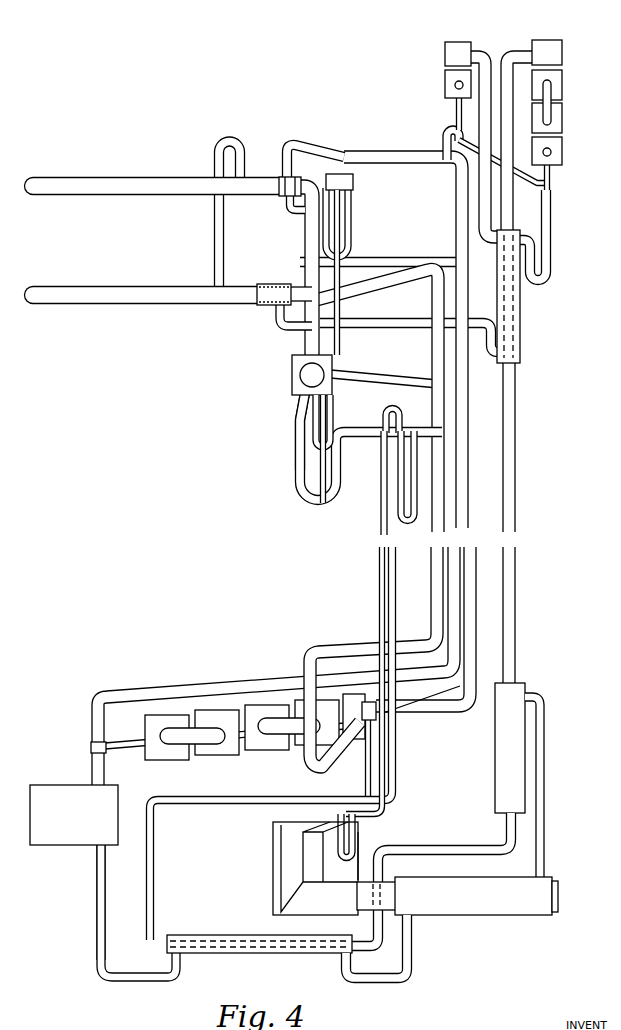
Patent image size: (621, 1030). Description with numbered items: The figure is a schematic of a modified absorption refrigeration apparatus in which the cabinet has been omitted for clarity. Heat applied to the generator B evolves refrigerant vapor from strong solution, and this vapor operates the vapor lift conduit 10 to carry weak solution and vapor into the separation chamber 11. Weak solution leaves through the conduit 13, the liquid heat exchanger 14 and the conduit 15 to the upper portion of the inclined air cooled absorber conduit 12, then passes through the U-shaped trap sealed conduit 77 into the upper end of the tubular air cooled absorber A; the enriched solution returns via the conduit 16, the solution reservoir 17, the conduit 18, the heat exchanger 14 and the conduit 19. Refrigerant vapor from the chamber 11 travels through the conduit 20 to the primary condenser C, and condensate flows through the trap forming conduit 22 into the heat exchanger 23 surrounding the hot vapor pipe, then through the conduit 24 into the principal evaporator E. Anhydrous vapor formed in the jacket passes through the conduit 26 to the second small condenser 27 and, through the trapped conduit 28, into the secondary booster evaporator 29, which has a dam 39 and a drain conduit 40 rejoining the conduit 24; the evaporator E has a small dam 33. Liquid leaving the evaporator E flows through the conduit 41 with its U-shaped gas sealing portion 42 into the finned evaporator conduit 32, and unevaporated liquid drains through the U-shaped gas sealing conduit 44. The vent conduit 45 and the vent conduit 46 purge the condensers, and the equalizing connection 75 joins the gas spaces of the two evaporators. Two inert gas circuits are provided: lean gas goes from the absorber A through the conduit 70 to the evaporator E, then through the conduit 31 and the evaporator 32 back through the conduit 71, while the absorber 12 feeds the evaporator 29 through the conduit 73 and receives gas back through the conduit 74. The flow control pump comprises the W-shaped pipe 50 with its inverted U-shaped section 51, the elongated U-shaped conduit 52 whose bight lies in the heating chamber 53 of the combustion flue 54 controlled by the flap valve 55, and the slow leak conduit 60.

The vapor lift conduit 10 is at (546, 826).
The separation chamber 11 is at (494, 749).
The air cooled absorber conduit 12 is at (378, 716).
The conduit 13 is at (430, 849).
The liquid heat exchanger 14 is at (268, 952).
The conduit 15 is at (151, 887).
The conduit 16 is at (92, 761).
The solution reservoir 17 is at (92, 808).
The conduit 18 is at (101, 916).
The conduit 19 is at (367, 978).
The conduit 20 is at (518, 509).
The conduit 22 is at (548, 243).
The heat exchanger 23 is at (520, 330).
The conduit 24 is at (378, 325).
The conduit 26 is at (476, 52).
The second small condenser 27 is at (452, 40).
The conduit 28 is at (380, 153).
The secondary booster evaporator 29 is at (107, 183).
The conduit 31 is at (306, 337).
The finned air cooling evaporator conduit 32 is at (303, 369).
The small dam 33 is at (275, 286).
The dam 39 is at (297, 183).
The drain conduit 40 is at (337, 218).
The conduit 41 is at (332, 349).
The U-shaped gas sealing portion 42 is at (327, 411).
The U-shaped gas sealing conduit 44 is at (298, 430).
The vent conduit 45 is at (540, 183).
The vent conduit 46 is at (293, 146).
The W-shaped pipe 50 is at (318, 477).
The inverted U-shaped section 51 is at (386, 450).
The elongated U-shaped conduit 52 is at (393, 810).
The heating chamber 53 is at (360, 846).
The products of combustion discharge flue 54 is at (286, 857).
The flap valve 55 is at (330, 878).
The slow leak conduit 60 is at (390, 418).
The conduit 70 is at (324, 653).
The conduit 71 is at (385, 379).
The conduit 73 is at (456, 705).
The conduit 74 is at (387, 263).
The equalizing connection 75 is at (221, 244).
The U-shaped trap sealed conduit 77 is at (337, 772).
The tubular air cooled absorber A is at (217, 757).
The generator B is at (455, 892).
The primary condenser C is at (556, 90).
The principal evaporator E is at (153, 272).